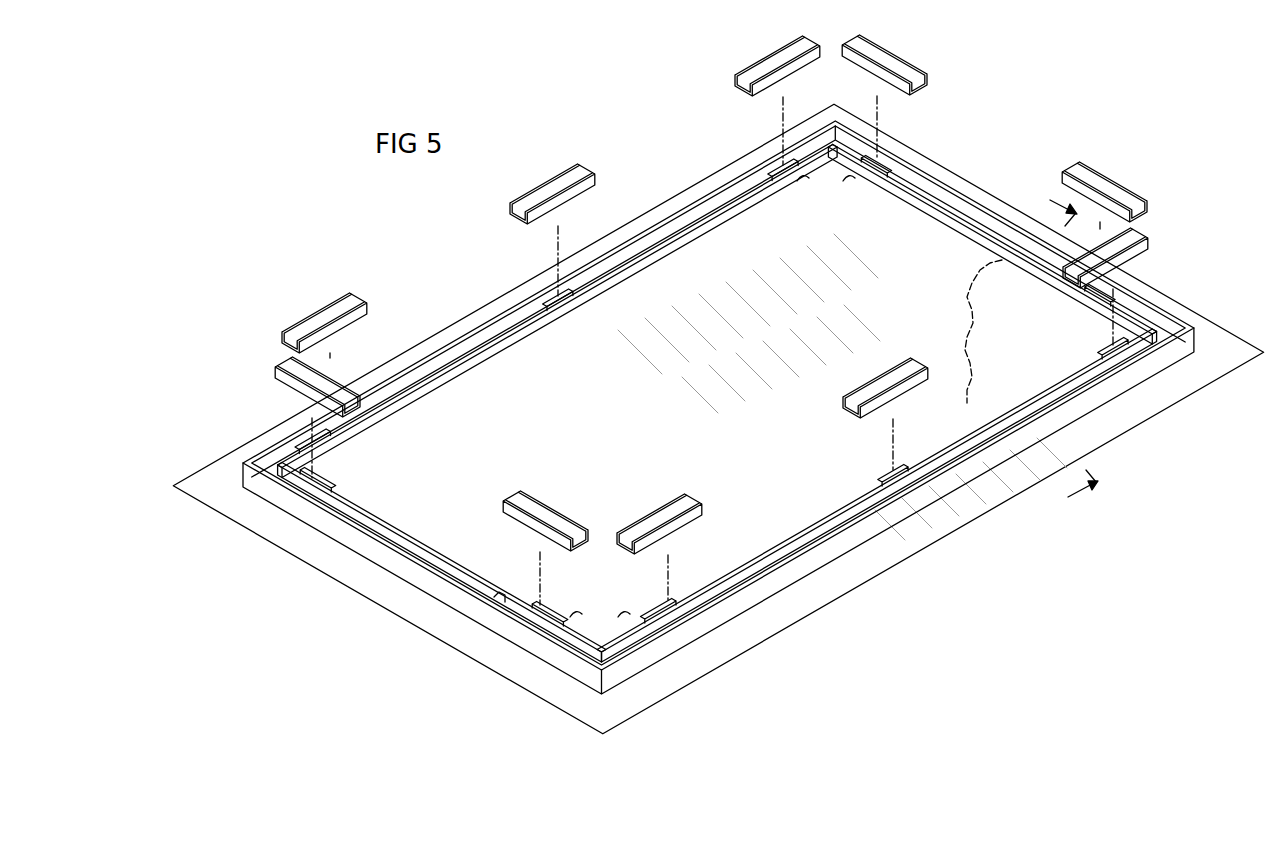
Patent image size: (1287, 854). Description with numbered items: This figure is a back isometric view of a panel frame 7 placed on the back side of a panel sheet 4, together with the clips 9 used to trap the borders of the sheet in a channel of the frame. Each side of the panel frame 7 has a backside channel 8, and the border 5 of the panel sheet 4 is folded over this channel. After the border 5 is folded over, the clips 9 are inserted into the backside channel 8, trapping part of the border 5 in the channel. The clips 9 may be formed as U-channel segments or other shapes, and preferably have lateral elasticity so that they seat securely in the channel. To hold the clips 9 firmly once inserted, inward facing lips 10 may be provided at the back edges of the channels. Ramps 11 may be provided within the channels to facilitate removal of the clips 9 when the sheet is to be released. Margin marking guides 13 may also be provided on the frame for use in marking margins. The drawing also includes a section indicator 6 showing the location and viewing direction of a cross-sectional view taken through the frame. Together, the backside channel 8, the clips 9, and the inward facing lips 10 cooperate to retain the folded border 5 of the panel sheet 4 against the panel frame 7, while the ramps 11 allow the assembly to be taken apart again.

The panel sheet 4 is at (620, 444).
The border 5 is at (778, 620).
The section line of FIG. 6 is at (1064, 351).
The panel frame 7 is at (810, 524).
The backside channel 8 is at (447, 364).
The clips 9 is at (548, 516).
The inward facing lips 10 is at (545, 293).
The ramps 11 is at (503, 600).
The margin marking guides 13 is at (803, 179).